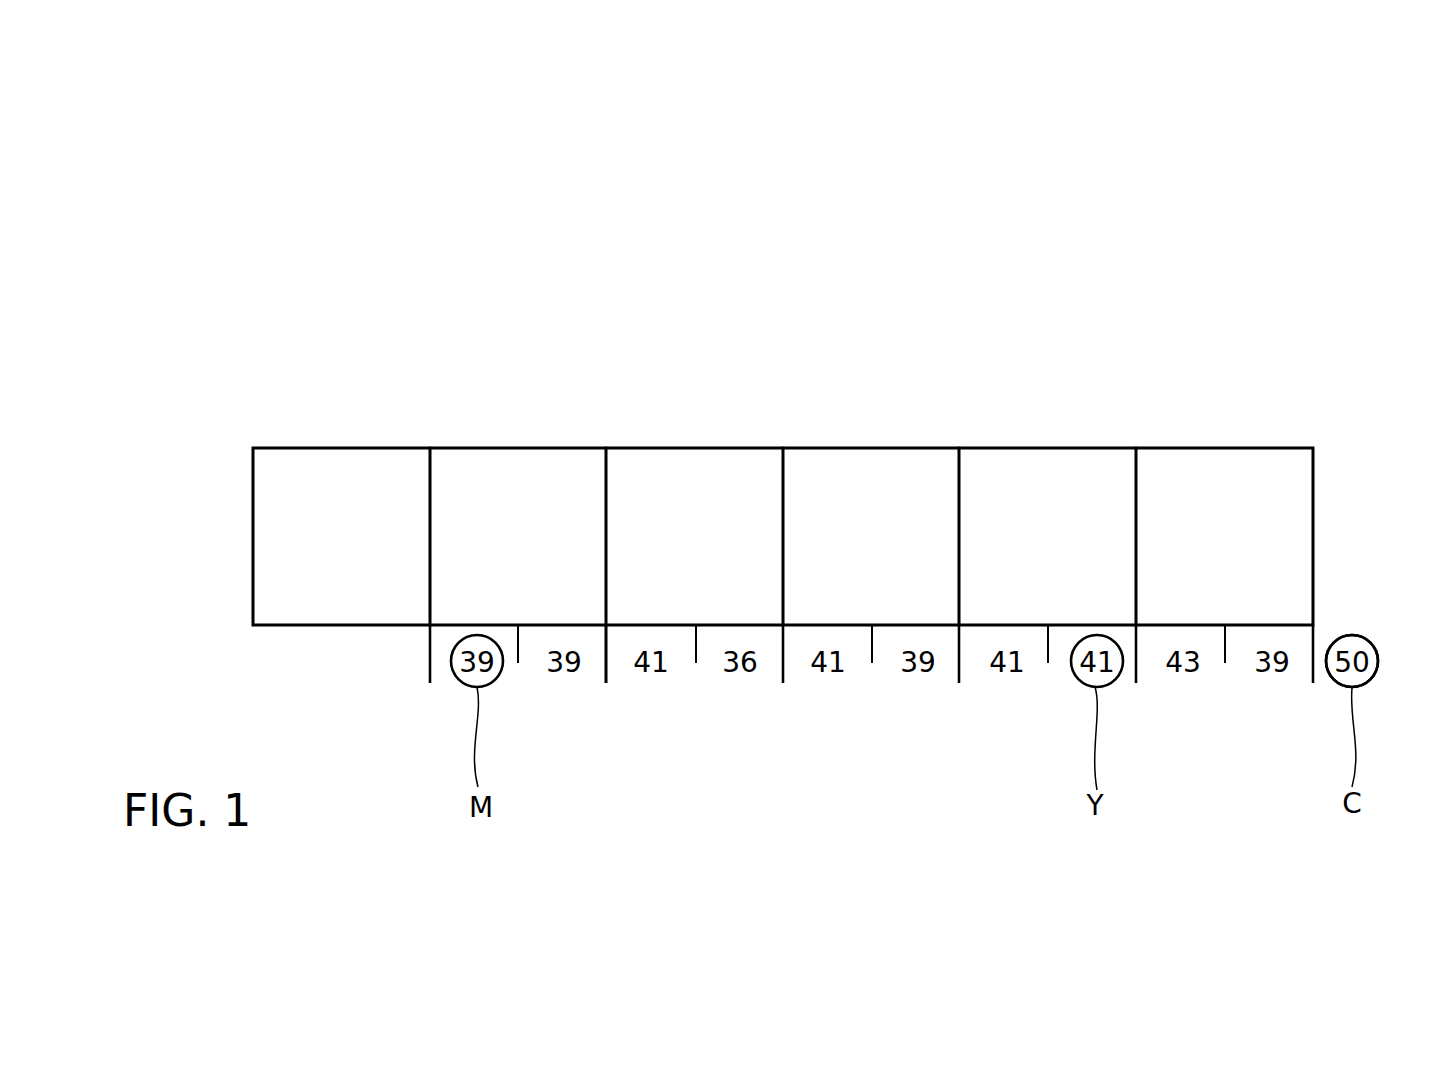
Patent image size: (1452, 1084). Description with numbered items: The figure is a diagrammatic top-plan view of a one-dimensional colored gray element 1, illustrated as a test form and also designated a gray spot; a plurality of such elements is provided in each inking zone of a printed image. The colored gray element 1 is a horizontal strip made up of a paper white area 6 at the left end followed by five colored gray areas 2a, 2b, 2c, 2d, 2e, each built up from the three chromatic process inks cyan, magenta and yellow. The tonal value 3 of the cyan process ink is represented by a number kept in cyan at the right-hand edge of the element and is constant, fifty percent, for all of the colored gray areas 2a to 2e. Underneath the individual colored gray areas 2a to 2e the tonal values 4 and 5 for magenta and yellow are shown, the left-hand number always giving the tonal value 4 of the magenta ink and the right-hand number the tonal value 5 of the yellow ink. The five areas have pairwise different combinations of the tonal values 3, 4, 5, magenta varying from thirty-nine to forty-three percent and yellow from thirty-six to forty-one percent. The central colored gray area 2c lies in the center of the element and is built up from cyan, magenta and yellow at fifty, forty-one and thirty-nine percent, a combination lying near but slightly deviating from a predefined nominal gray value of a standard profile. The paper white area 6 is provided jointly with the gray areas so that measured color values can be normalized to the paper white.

The colored gray element 1 is at (285, 383).
The colored gray area 2a is at (519, 475).
The colored gray area 2b is at (682, 473).
The central colored gray area 2c is at (856, 475).
The colored gray area 2d is at (1041, 480).
The colored gray area 2e is at (1213, 478).
The tonal value of the cyan process ink 3 is at (1373, 643).
The tonal value of the magenta process ink 4 is at (651, 685).
The tonal value of the yellow process ink 5 is at (921, 685).
The paper white area 6 is at (363, 478).